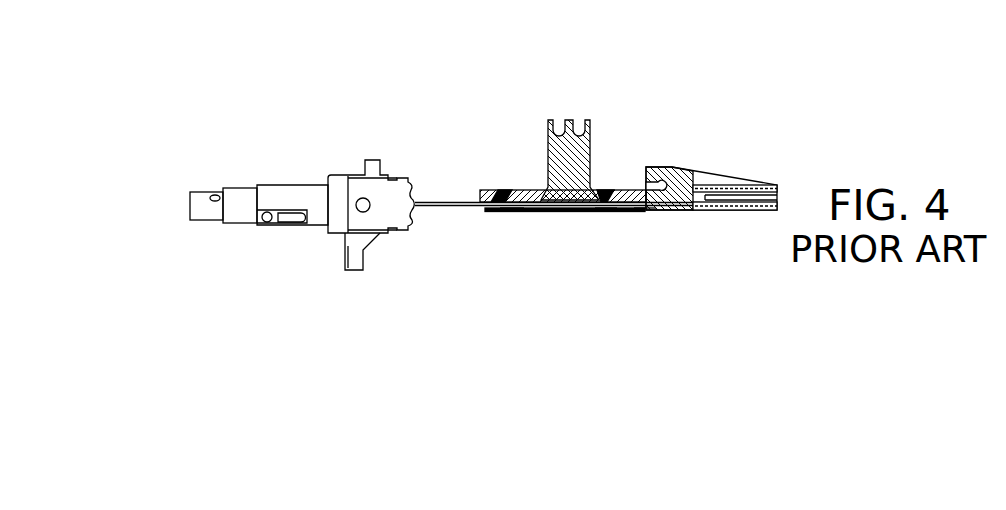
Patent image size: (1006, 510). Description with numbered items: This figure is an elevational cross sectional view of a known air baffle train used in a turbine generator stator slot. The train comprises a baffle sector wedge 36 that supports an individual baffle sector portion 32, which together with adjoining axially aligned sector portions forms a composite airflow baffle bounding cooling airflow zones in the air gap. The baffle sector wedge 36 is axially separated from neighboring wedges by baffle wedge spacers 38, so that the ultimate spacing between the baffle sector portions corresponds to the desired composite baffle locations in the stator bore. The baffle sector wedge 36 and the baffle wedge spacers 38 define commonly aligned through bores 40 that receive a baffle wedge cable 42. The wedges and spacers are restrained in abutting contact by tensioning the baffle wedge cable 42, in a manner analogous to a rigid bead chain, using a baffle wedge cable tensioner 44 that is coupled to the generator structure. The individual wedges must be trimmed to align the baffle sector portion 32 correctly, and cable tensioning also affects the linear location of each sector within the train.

The baffle sector portion 32 is at (548, 147).
The baffle sector wedge 36 is at (562, 202).
The baffle wedge spacer 38 is at (510, 190).
The through bore 40 is at (512, 203).
The baffle wedge cable 42 is at (423, 200).
The baffle wedge cable tensioner 44 is at (308, 202).